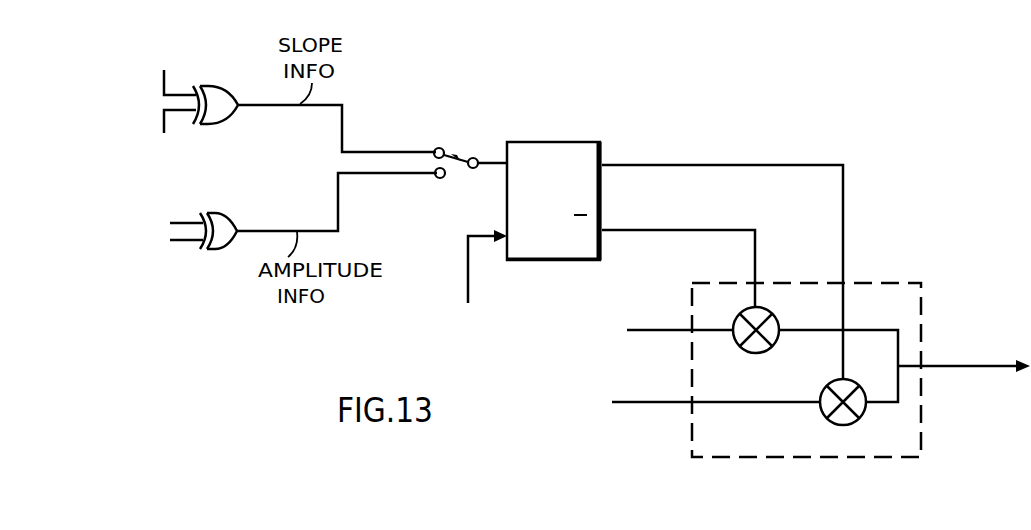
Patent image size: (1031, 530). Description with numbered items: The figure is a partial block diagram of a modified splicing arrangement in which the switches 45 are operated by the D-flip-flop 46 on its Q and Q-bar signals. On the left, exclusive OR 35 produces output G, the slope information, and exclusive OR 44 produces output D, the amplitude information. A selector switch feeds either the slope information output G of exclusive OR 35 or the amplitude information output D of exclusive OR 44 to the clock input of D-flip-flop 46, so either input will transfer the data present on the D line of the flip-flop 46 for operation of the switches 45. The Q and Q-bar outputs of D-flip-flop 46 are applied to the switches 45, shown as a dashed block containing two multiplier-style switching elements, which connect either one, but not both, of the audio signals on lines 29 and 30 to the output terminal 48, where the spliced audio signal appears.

The exclusive OR 35 is at (220, 87).
The exclusive OR 44 is at (220, 215).
The D-flip-flop 46 is at (565, 141).
The splicing switcher 45 is at (873, 283).
The line 29 is at (653, 328).
The line 30 is at (668, 378).
The output terminal 48 is at (982, 347).